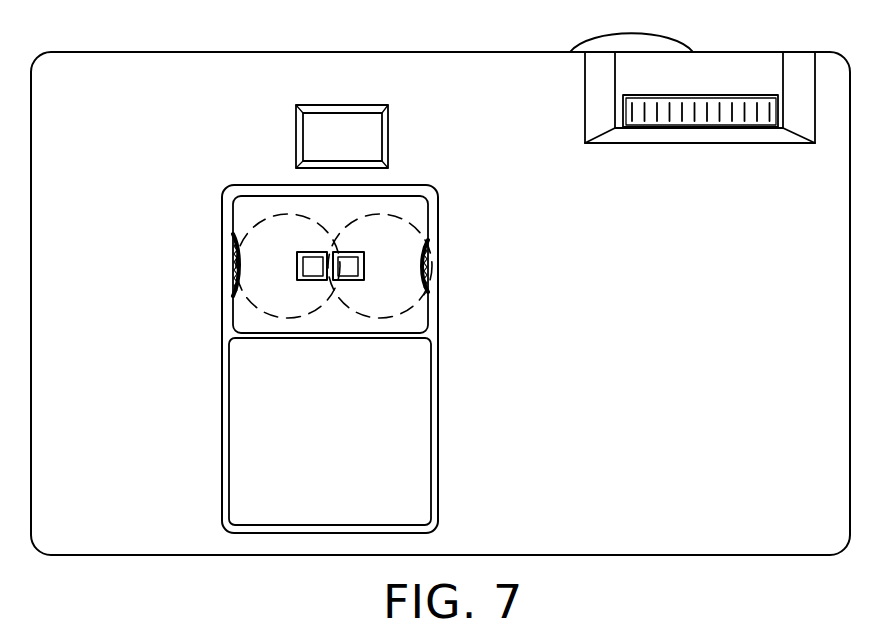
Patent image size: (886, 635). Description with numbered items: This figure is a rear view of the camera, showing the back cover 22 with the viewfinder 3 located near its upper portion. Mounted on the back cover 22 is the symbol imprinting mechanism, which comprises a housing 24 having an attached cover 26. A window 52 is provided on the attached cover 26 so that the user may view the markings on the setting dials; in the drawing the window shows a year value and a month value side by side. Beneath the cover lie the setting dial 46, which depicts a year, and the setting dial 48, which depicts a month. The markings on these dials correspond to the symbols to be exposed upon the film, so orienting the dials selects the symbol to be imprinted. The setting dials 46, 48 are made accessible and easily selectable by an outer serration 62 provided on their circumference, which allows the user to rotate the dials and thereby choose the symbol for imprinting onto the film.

The back cover 22 is at (195, 78).
The viewfinder 3 is at (368, 132).
The housing 24 is at (257, 513).
The attached cover 26 is at (245, 325).
The setting dial 46 is at (248, 237).
The setting dial 48 is at (418, 237).
The window 52 is at (300, 253).
The outer serration 62 is at (210, 260).